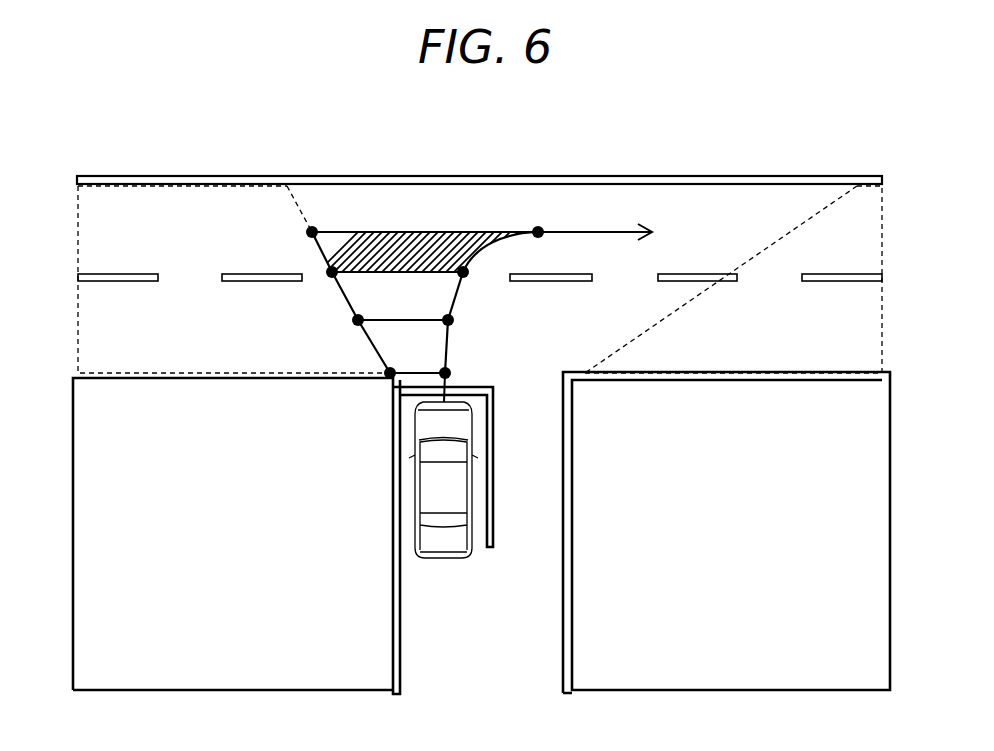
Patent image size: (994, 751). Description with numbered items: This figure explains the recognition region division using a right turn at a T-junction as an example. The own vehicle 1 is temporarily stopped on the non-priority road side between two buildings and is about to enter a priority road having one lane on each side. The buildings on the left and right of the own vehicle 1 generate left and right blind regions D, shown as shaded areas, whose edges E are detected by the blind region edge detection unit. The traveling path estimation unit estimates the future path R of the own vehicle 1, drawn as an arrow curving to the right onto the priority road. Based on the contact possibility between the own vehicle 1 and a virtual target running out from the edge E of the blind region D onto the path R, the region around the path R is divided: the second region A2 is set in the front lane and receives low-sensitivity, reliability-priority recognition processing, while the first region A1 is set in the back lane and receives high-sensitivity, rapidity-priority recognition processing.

The own vehicle 1 is at (442, 540).
The first region A1 is at (410, 229).
The second region A2 is at (433, 300).
The blind region D is at (130, 325).
The edge of blind region E is at (306, 214).
The future path R is at (580, 235).